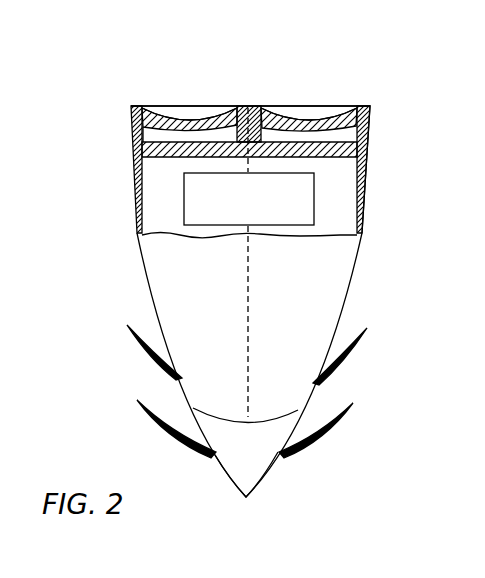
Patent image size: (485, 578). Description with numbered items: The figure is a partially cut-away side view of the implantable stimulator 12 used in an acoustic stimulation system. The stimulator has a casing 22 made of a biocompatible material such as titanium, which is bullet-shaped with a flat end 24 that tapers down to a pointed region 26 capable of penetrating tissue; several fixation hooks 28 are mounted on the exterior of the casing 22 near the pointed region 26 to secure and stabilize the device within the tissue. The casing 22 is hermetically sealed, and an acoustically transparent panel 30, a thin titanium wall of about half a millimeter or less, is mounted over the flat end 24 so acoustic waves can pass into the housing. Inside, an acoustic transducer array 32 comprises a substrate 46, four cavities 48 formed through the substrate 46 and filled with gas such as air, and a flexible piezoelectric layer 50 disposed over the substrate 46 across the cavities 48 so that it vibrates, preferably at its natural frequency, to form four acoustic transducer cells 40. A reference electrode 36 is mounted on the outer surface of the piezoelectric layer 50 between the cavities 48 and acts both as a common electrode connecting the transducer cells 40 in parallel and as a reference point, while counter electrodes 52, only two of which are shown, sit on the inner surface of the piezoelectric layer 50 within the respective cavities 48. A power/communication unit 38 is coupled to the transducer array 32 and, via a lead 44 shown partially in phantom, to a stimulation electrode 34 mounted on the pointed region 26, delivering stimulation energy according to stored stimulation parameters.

The implantable stimulator 12 is at (384, 161).
The casing 22 is at (335, 303).
The flat end 24 is at (130, 106).
The pointed region 26 is at (232, 489).
The fixation hooks 28 is at (143, 350).
The acoustically transparent panel 30 is at (347, 108).
The acoustic transducer array 32 is at (292, 107).
The stimulation electrode 34 is at (268, 468).
The reference electrode 36 is at (248, 106).
The power/communication unit 38 is at (184, 197).
The acoustic transducer cells 40 is at (198, 112).
The lead 44 is at (247, 292).
The substrate 46 is at (141, 147).
The cavities 48 is at (153, 128).
The flexible piezoelectric layer 50 is at (160, 110).
The counter electrodes 52 is at (141, 106).